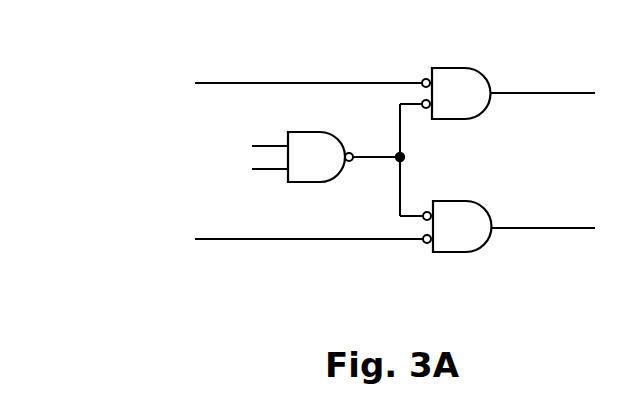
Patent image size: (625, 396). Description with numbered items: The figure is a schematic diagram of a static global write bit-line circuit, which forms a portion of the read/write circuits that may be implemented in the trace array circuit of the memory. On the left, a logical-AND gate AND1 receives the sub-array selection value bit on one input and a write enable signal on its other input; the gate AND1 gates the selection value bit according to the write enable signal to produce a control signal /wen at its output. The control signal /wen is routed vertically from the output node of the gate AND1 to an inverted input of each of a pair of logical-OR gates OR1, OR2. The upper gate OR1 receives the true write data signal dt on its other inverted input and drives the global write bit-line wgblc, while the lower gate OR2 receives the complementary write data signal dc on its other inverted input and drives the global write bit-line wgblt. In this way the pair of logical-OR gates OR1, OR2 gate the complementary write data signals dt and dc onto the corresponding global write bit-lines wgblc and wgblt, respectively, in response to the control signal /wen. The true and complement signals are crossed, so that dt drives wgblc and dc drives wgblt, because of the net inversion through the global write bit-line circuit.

The logical-AND gate AND1 is at (318, 147).
The logical-OR gate OR1 is at (456, 80).
The logical-OR gate OR2 is at (457, 216).
The write data signal dt is at (292, 84).
The complementary write data signal dc is at (293, 240).
The sub-array selection value bit is at (252, 146).
The control signal wen is at (387, 160).
The global write bit-line wgblc is at (542, 77).
The global write bit-line wgblt is at (543, 245).